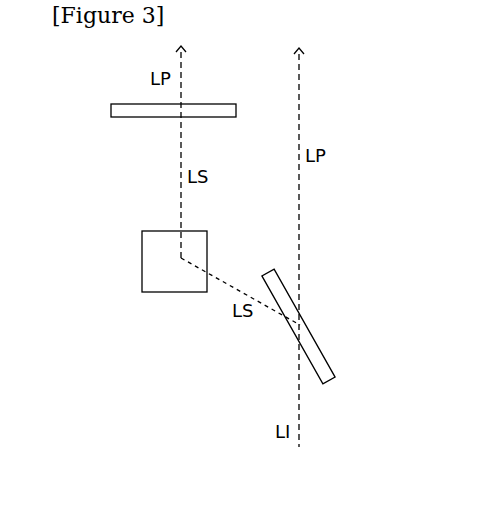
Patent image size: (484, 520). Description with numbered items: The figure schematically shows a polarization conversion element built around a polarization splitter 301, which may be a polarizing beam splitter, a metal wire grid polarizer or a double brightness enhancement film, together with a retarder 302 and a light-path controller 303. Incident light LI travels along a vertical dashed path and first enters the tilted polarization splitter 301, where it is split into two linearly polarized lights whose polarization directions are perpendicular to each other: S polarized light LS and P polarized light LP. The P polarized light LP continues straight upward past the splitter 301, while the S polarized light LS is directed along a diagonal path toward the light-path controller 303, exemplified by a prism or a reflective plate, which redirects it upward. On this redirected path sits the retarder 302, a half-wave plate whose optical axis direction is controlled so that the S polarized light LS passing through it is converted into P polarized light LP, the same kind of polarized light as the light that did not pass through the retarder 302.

The polarization splitter 301 is at (336, 371).
The retarder 302 is at (111, 110).
The light-path controller 303 is at (142, 261).